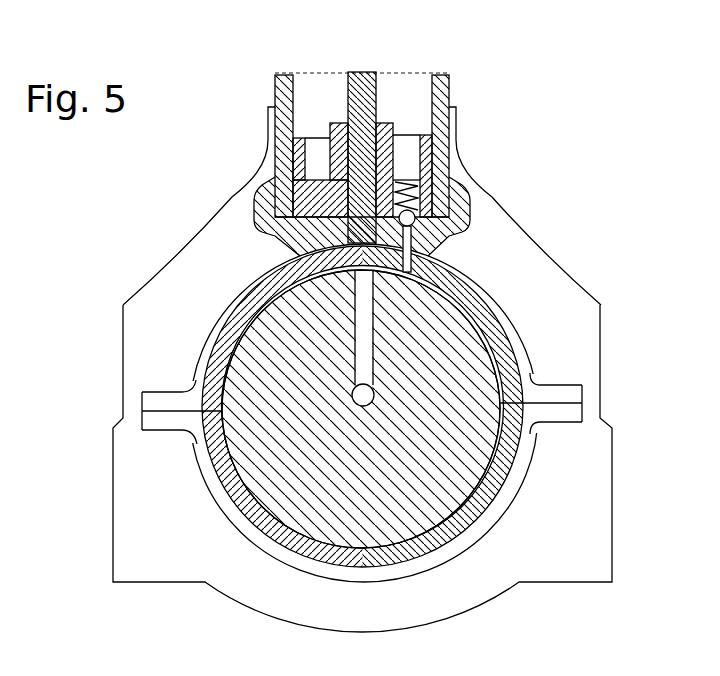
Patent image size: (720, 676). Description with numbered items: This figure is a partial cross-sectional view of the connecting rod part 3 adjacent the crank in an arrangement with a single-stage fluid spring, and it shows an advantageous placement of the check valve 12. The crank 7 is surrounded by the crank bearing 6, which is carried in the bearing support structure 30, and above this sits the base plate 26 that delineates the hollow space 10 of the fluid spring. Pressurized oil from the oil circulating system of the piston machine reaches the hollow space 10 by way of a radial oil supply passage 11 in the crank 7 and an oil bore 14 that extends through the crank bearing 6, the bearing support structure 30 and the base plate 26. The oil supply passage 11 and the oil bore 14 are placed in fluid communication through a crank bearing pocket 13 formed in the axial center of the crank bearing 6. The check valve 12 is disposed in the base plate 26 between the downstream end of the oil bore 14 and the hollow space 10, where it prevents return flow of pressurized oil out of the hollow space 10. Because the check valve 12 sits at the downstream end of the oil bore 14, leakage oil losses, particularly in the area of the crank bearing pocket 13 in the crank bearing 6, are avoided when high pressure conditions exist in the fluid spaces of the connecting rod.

The connecting rod part 3 is at (483, 100).
The crank bearing 6 is at (523, 372).
The crank 7 is at (410, 525).
The hollow space 10 is at (321, 98).
The radial oil supply passage 11 is at (360, 362).
The check valve 12 is at (420, 184).
The crank bearing pocket 13 is at (275, 300).
The oil bore 14 is at (430, 251).
The base plate 26 is at (320, 200).
The bearing support structure 30 is at (557, 327).